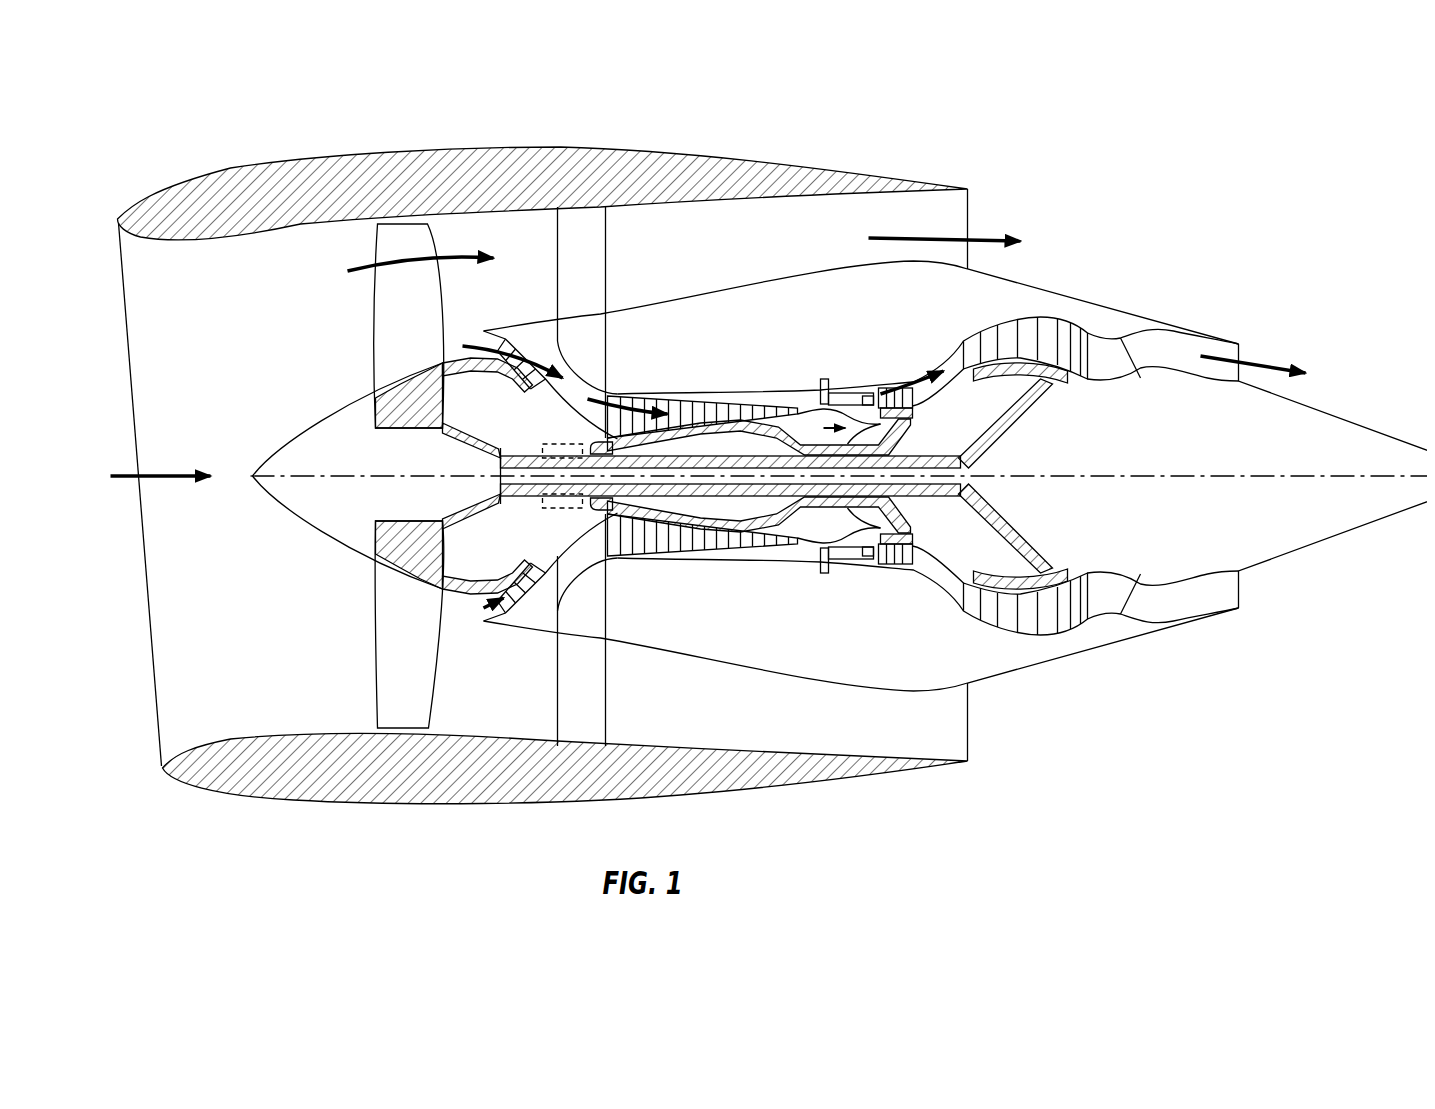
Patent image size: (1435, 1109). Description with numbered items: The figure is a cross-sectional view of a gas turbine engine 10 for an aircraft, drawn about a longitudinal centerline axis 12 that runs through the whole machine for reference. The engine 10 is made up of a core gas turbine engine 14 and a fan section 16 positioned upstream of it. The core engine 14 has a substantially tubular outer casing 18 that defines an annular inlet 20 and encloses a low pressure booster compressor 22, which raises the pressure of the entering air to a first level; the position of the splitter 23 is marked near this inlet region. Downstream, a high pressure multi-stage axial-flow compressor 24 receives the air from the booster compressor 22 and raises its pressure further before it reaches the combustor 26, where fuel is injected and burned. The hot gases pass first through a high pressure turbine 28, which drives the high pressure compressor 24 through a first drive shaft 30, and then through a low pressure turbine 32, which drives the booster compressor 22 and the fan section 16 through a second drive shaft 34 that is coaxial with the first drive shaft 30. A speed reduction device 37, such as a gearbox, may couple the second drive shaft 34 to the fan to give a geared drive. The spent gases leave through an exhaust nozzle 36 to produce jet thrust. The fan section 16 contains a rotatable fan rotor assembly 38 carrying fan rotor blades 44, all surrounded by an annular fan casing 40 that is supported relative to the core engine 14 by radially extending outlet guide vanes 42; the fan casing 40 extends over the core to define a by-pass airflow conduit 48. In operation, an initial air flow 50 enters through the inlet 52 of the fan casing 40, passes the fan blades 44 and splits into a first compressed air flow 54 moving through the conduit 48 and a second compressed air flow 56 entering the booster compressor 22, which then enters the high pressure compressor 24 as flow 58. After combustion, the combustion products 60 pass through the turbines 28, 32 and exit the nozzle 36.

The gas turbine engine 10 is at (993, 112).
The longitudinal or axial centerline axis 12 is at (1167, 472).
The core gas turbine engine 14 is at (790, 340).
The fan section 16 is at (455, 122).
The outer casing 18 is at (793, 672).
The annular inlet 20 is at (487, 612).
The booster compressor 22 is at (550, 570).
The splitter 23 is at (510, 613).
The high pressure compressor 24 is at (638, 543).
The combustor 26 is at (847, 547).
The first (high pressure) turbine 28 is at (927, 560).
The first (high pressure) drive shaft 30 is at (890, 413).
The second (low pressure) turbine 32 is at (1067, 627).
The second (low pressure) drive shaft 34 is at (543, 455).
The exhaust nozzle 36 is at (1242, 350).
The speed reduction device 37 is at (567, 443).
The fan rotor assembly 38 is at (437, 432).
The fan casing 40 is at (432, 817).
The outlet guide vanes 42 is at (1120, 613).
The fan rotor blades 44 is at (370, 657).
The by-pass airflow conduit 48 is at (721, 262).
The initial air flow 50 is at (153, 470).
The inlet 52 is at (150, 737).
The first compressed air flow 54 is at (353, 263).
The second compressed air flow 56 is at (463, 345).
The air flow entering high pressure compressor 58 is at (613, 390).
The combustion products 60 is at (887, 395).